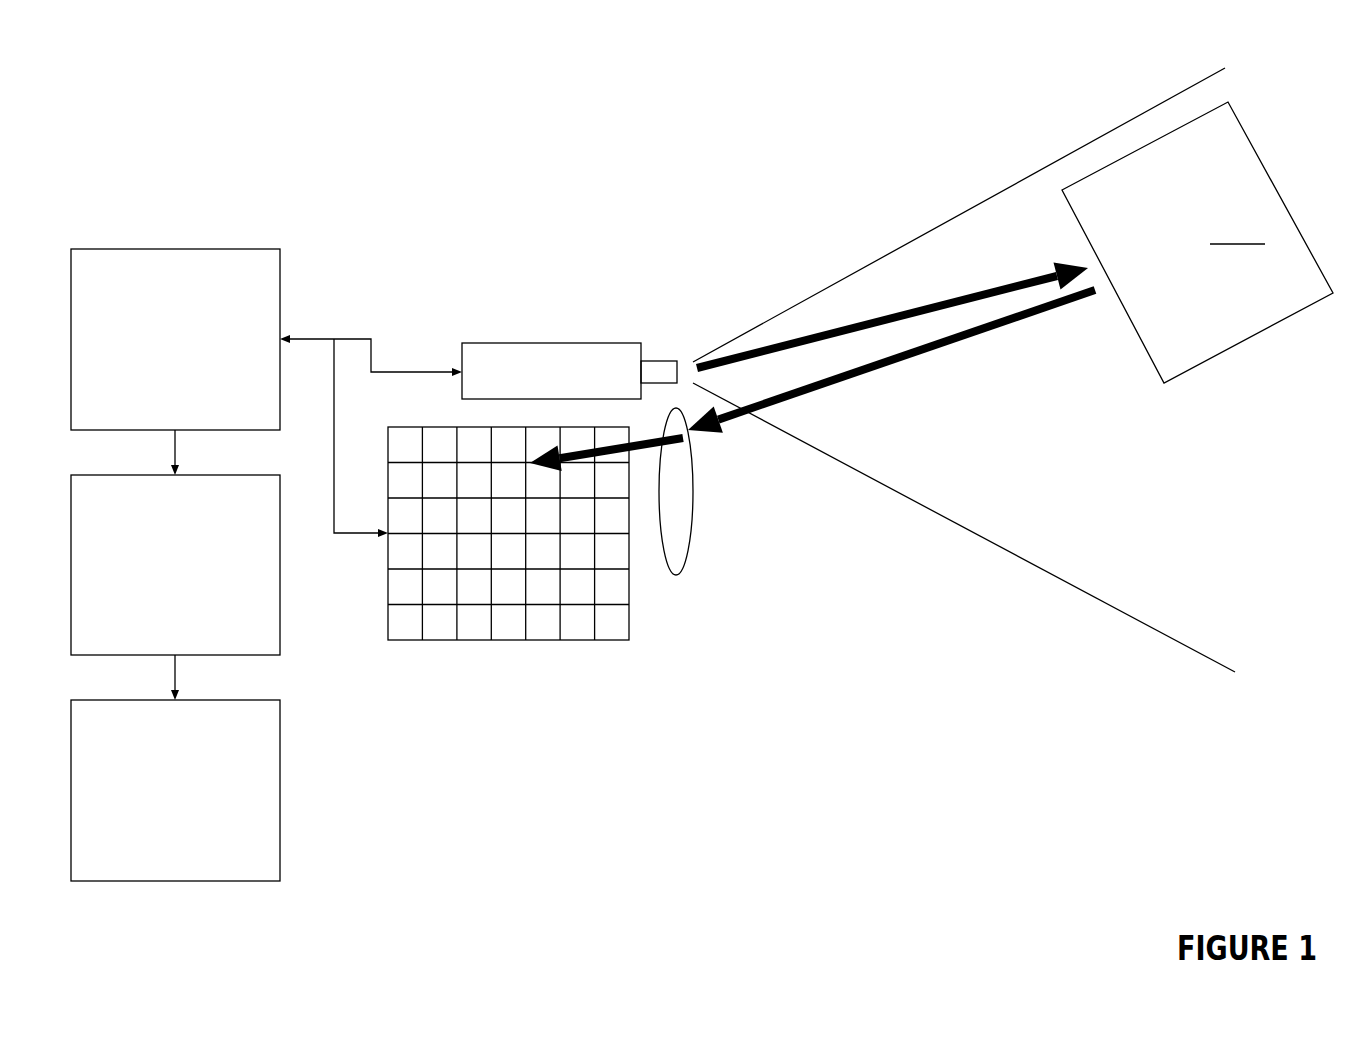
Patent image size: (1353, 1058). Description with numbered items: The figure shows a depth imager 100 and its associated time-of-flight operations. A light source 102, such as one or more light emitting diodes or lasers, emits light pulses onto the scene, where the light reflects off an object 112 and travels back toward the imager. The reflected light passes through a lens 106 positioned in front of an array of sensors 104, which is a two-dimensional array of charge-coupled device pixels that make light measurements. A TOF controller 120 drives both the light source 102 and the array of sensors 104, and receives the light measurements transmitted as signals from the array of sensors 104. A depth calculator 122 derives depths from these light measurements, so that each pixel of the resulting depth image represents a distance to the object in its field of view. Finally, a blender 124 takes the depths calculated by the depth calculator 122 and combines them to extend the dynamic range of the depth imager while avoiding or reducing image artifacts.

The time of flight system 100 is at (402, 115).
The light source 102 is at (480, 340).
The array of sensors 104 is at (593, 640).
The lens 106 is at (678, 575).
The object 112 is at (1095, 160).
The TOF controller 120 is at (266, 393).
The depth calculator 122 is at (175, 587).
The blender 124 is at (175, 790).